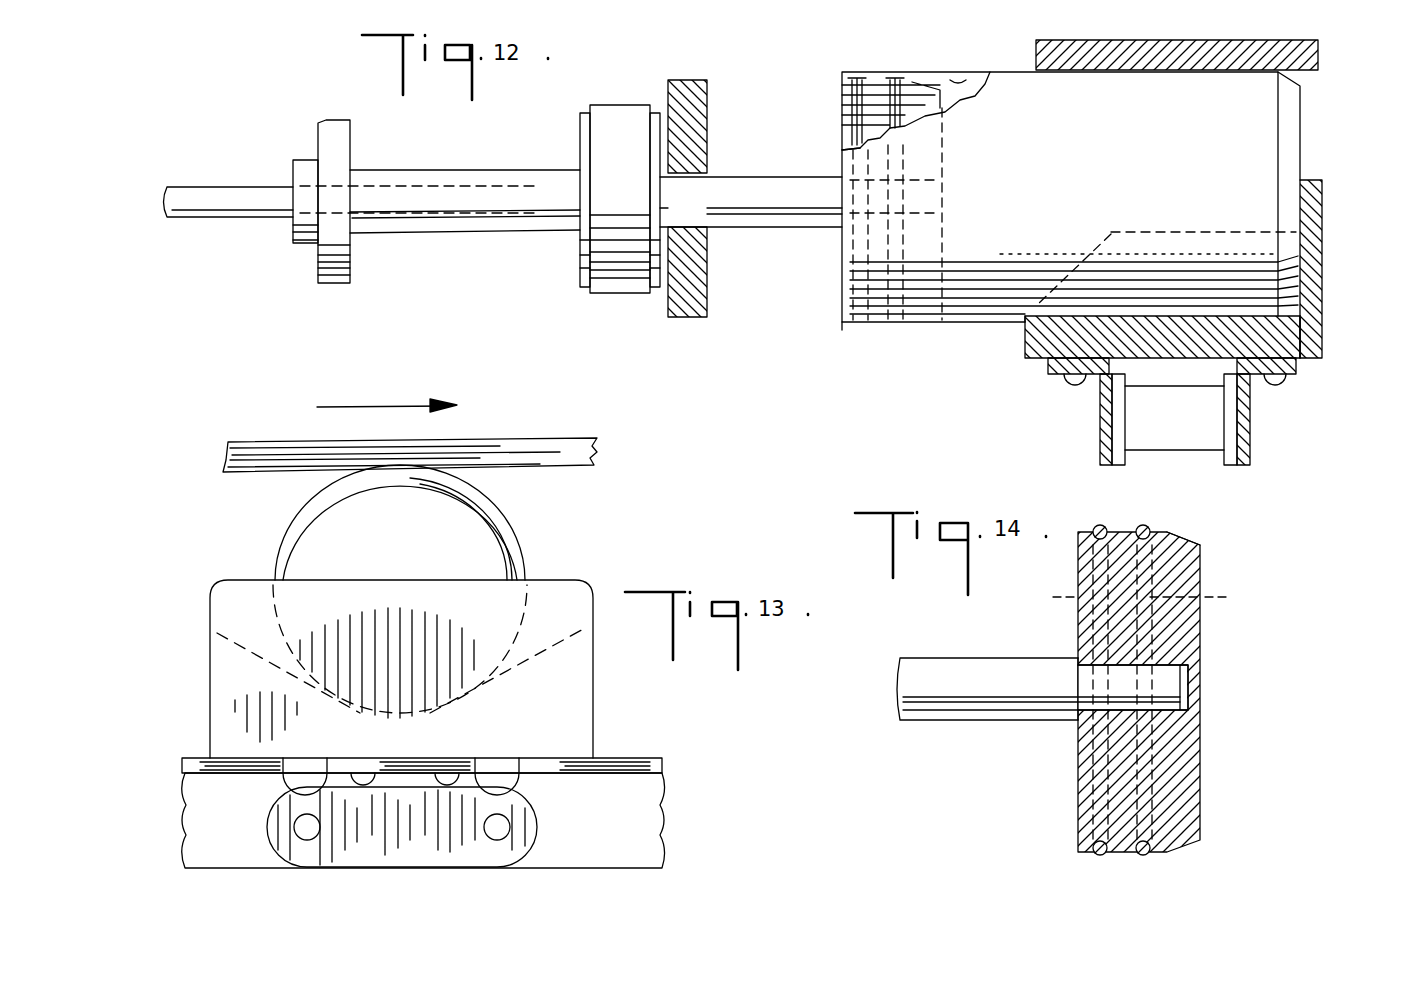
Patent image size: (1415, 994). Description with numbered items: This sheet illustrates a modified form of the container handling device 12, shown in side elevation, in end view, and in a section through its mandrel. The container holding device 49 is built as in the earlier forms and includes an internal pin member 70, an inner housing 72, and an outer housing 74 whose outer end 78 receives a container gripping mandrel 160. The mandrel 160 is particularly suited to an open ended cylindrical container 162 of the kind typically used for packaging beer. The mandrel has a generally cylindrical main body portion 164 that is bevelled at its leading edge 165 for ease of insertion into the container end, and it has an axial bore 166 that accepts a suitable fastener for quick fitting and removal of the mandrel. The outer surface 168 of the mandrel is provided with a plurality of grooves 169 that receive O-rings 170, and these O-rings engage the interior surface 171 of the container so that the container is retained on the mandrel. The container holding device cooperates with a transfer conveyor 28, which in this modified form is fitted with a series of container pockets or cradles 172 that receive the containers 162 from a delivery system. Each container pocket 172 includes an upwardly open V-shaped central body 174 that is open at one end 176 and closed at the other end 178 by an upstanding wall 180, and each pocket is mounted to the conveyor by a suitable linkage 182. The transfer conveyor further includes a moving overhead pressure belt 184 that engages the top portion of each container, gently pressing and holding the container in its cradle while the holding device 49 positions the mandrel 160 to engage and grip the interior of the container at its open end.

In FIG. 12, the side elevational view 12 is at (845, 325).
In FIG. 13, the transfer conveyor 28 is at (146, 800).
In FIG. 12, the container holding device 49 is at (545, 248).
In FIG. 12, the internal pin member 70 is at (207, 195).
In FIG. 12, the inner housing 72 is at (418, 176).
In FIG. 12, the outer housing 74 is at (763, 178).
In FIG. 14, the outer housing 74 is at (977, 662).
In FIG. 12, the outer end 78 is at (842, 152).
In FIG. 12, the container gripping mandrel 160 is at (842, 278).
In FIG. 14, the container gripping mandrel 160 is at (1050, 737).
In FIG. 12, the open ended cylindrical container 162 is at (953, 322).
In FIG. 13, the open ended cylindrical container 162 is at (305, 528).
In FIG. 14, the main body portion 164 is at (1120, 532).
In FIG. 14, the leading edge 165 is at (1187, 533).
In FIG. 14, the axial bore 166 is at (1200, 675).
In FIG. 14, the outer surface 168 is at (1080, 532).
In FIG. 14, the grooves 169 is at (1144, 597).
In FIG. 12, the O-rings 170 is at (860, 82).
In FIG. 14, the O-rings 170 is at (1143, 857).
In FIG. 12, the interior surface 171 is at (962, 80).
In FIG. 12, the container pockets or cradles 172 is at (1027, 366).
In FIG. 13, the container pockets or cradles 172 is at (223, 703).
In FIG. 13, the V-shaped central body 174 is at (245, 652).
In FIG. 12, the open end 176 is at (1010, 326).
In FIG. 12, the closed end 178 is at (1311, 163).
In FIG. 12, the upstanding wall 180 is at (1318, 258).
In FIG. 13, the upstanding wall 180 is at (588, 586).
In FIG. 13, the linkage 182 is at (408, 853).
In FIG. 12, the overhead pressure belt 184 is at (1320, 53).
In FIG. 13, the overhead pressure belt 184 is at (240, 452).